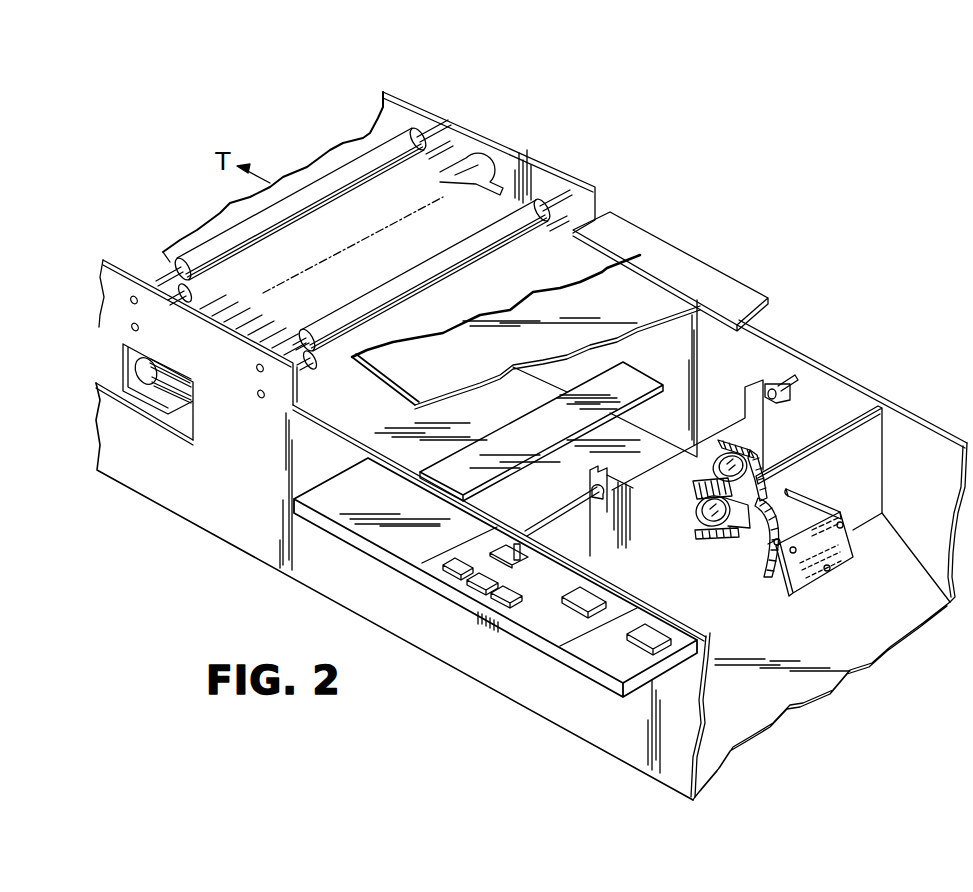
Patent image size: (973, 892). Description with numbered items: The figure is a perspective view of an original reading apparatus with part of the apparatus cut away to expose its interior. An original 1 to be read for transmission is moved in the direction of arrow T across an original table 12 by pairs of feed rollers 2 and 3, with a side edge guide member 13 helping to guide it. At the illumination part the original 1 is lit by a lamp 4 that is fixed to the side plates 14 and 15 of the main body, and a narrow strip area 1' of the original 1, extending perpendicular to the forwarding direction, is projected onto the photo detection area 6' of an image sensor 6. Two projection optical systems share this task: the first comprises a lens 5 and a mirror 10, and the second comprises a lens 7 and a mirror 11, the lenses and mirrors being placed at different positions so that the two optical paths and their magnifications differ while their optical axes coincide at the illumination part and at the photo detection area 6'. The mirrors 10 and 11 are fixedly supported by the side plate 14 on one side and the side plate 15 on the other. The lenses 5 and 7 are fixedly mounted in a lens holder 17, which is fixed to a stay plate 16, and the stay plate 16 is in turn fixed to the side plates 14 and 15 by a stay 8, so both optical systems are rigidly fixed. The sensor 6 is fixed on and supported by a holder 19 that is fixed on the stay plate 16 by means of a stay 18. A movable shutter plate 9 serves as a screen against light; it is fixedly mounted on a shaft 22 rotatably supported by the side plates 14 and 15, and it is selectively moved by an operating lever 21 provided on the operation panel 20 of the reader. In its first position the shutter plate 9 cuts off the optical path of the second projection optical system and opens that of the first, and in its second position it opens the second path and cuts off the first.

The original 1 is at (526, 316).
The narrow strip area 1' is at (303, 192).
The feed rollers 2 is at (497, 229).
The feed rollers 3 is at (375, 155).
The lamp 4 is at (155, 367).
The lens 5 is at (714, 465).
The image sensor 6 is at (809, 569).
The photo detection area 6' is at (821, 584).
The lens 7 is at (700, 520).
The stay 8 is at (782, 497).
The shutter plate 9 is at (753, 424).
The mirror 10 is at (495, 184).
The mirror 11 is at (627, 372).
The original table 12 is at (643, 296).
The side edge guide member 13 is at (733, 288).
The side plate 14 is at (913, 427).
The side plate 15 is at (318, 438).
The stay plate 16 is at (872, 508).
The lens holder 17 is at (743, 528).
The stay 18 is at (818, 506).
The holder 19 is at (843, 565).
The operation panel 20 is at (408, 550).
The operating lever 21 is at (542, 543).
The shaft 22 is at (567, 504).